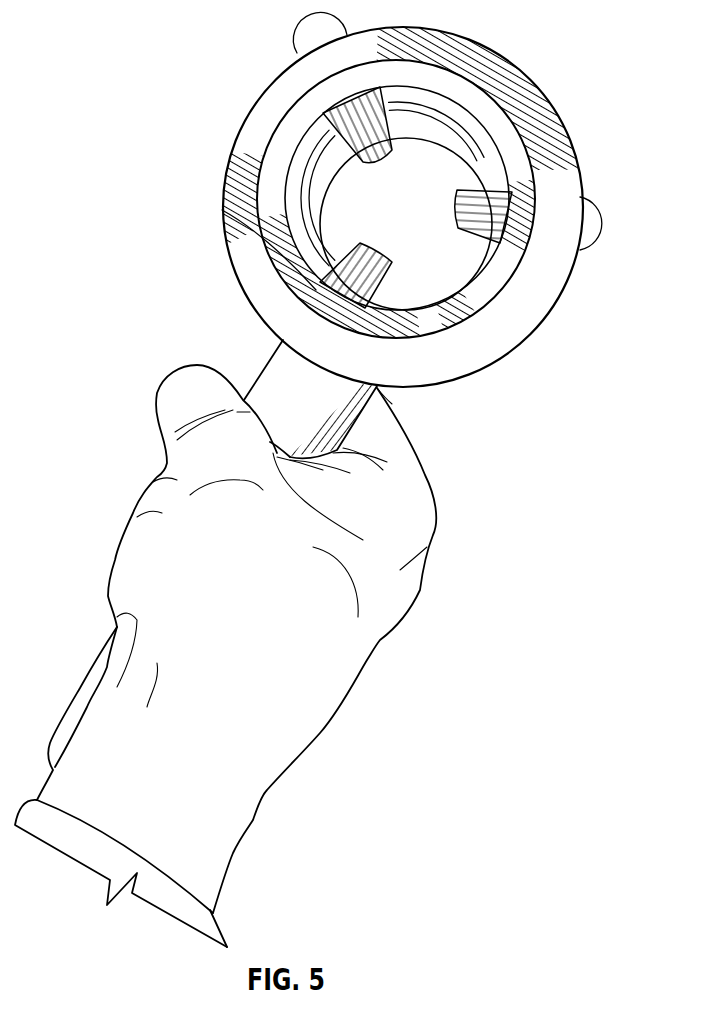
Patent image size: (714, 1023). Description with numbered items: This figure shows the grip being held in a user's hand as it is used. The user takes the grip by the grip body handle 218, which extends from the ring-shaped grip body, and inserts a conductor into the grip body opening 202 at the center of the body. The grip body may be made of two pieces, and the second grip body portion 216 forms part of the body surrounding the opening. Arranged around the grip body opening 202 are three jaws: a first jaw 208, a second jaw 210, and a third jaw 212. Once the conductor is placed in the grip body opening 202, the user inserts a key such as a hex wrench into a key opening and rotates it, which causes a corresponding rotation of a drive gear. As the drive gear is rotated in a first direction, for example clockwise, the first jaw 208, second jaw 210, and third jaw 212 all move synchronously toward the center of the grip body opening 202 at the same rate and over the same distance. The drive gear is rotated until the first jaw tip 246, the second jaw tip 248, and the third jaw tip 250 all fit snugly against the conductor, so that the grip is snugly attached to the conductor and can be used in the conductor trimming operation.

The grip body opening 202 is at (478, 170).
The first jaw 208 is at (310, 29).
The second jaw 210 is at (598, 230).
The third jaw 212 is at (330, 270).
The second grip body portion 216 is at (575, 183).
The grip body handle 218 is at (284, 352).
The first jaw tip 246 is at (380, 152).
The second jaw tip 248 is at (458, 192).
The third jaw tip 250 is at (372, 256).